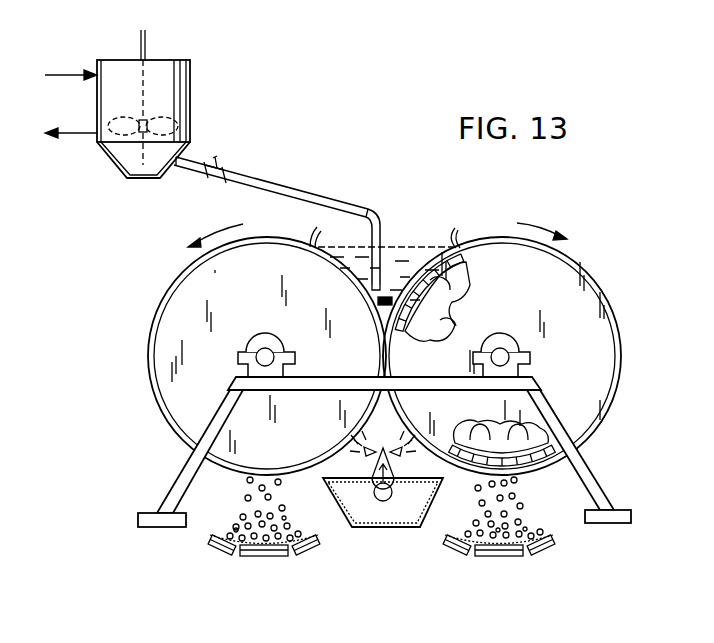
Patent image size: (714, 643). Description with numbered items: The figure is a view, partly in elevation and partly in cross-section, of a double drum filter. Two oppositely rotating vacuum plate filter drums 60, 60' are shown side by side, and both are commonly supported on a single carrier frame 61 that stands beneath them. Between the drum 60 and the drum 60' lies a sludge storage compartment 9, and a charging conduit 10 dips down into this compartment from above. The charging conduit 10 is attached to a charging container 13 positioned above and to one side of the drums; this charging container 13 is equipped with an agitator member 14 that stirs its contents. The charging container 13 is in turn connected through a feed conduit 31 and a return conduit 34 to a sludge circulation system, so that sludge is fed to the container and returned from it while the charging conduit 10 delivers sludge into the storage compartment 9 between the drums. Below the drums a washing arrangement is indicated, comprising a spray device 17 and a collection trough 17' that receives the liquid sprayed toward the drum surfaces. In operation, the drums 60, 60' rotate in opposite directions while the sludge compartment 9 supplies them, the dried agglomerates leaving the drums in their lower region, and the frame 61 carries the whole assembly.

The sludge storage compartment 9 is at (413, 253).
The charging conduit 10 is at (343, 209).
The charging container 13 is at (182, 75).
The agitator member 14 is at (182, 121).
The spray device 17 is at (392, 497).
The collection trough 17' is at (383, 524).
The feed conduit 31 is at (62, 73).
The return conduit 34 is at (74, 135).
The vacuum plate filter drum 60 is at (515, 349).
The vacuum plate filter drum 60' is at (249, 349).
The carrier frame 61 is at (541, 386).